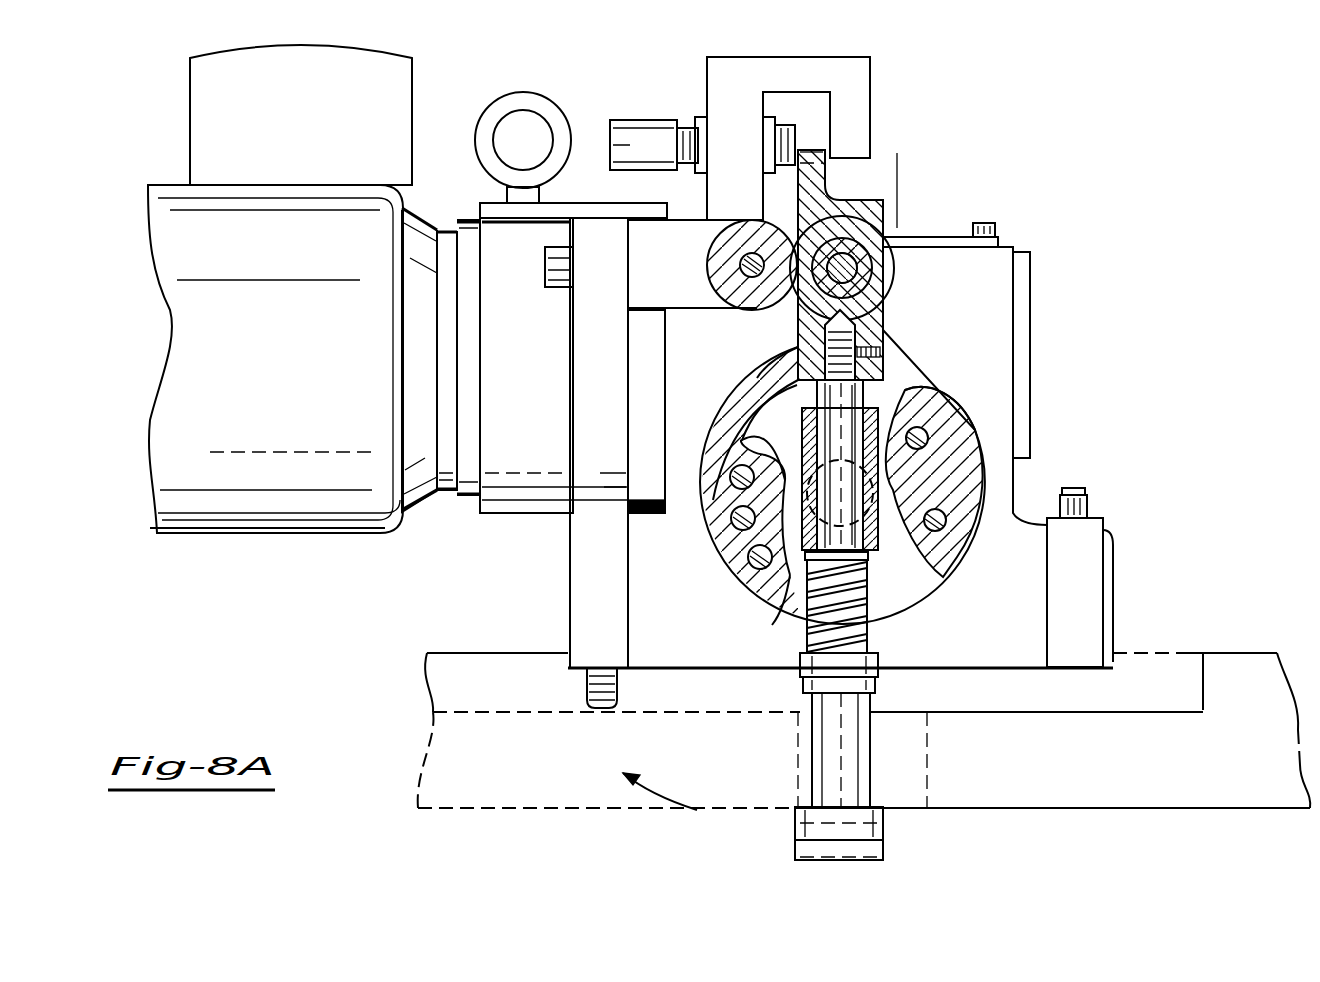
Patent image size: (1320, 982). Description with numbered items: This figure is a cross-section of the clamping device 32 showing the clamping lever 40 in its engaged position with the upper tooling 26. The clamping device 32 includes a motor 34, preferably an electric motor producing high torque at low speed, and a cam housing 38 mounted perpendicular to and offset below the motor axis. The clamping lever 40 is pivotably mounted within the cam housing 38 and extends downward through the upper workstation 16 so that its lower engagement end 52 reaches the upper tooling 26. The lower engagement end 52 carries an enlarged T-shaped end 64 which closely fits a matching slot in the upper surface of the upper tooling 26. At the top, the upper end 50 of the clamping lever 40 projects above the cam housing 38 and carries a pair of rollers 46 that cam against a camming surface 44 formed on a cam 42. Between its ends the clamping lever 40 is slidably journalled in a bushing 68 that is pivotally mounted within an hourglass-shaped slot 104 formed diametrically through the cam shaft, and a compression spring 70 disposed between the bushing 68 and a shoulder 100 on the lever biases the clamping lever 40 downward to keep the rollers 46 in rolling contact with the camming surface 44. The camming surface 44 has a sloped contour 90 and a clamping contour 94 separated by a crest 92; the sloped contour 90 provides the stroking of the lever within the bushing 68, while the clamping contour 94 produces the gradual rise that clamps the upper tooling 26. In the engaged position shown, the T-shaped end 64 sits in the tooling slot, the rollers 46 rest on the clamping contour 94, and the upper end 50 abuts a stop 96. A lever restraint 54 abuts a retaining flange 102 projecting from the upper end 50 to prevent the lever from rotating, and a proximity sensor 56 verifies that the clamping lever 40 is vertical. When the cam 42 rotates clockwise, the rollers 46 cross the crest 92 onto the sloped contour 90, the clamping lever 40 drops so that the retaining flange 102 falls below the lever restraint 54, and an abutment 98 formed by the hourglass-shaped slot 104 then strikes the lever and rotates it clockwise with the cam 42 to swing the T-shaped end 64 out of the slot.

The upper workstation 16 is at (1188, 660).
The upper tooling 26 is at (1180, 800).
The clamping device 32 is at (1118, 222).
The motor 34 is at (268, 510).
The cam housing 38 is at (1032, 287).
The clamping lever 40 is at (868, 398).
The cam 42 is at (957, 463).
The camming surface 44 is at (983, 400).
The rollers 46 is at (900, 267).
The upper end 50 is at (832, 172).
The lower engagement end 52 is at (810, 748).
The lever restraint 54 is at (787, 65).
The proximity sensor 56 is at (632, 127).
The T-shaped end 64 is at (885, 820).
The bushing 68 is at (933, 560).
The compression spring 70 is at (870, 619).
The sloped contour 90 is at (740, 416).
The crest 92 is at (760, 357).
The clamping contour 94 is at (890, 325).
The stop 96 is at (735, 268).
The abutment 98 is at (707, 517).
The shoulder 100 is at (873, 645).
The retaining flange 102 is at (812, 147).
The hourglass-shaped slot 104 is at (793, 577).